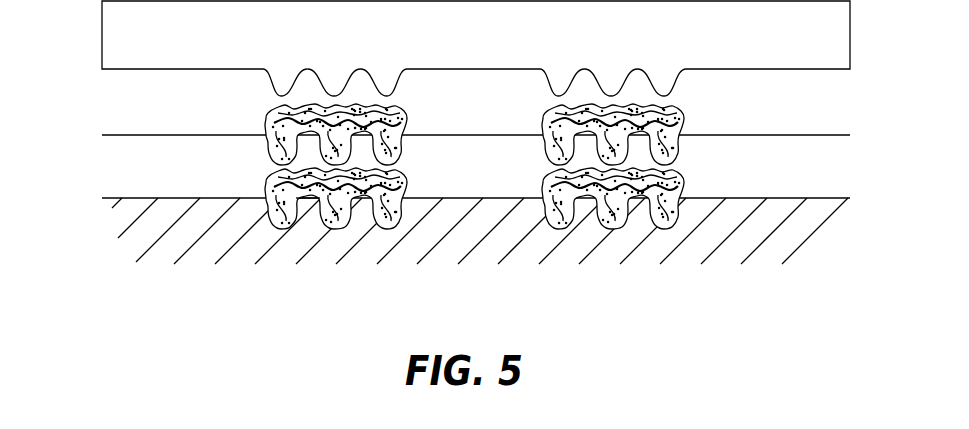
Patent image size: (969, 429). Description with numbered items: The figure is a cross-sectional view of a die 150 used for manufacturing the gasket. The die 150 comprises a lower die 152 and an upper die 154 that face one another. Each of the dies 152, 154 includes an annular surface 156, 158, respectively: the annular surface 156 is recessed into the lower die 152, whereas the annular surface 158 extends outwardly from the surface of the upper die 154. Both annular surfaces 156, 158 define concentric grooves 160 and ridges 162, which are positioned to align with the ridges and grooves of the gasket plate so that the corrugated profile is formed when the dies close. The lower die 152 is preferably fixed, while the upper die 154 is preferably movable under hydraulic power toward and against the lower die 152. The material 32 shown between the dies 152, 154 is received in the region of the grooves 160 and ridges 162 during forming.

The die 150 is at (84, 117).
The lower die 152 is at (137, 229).
The upper die 154 is at (128, 37).
The annular surface 156 is at (292, 208).
The annular surface 158 is at (390, 95).
The concentric grooves 160 is at (303, 82).
The ridges 162 is at (278, 92).
The conductive composite material 32 is at (396, 120).